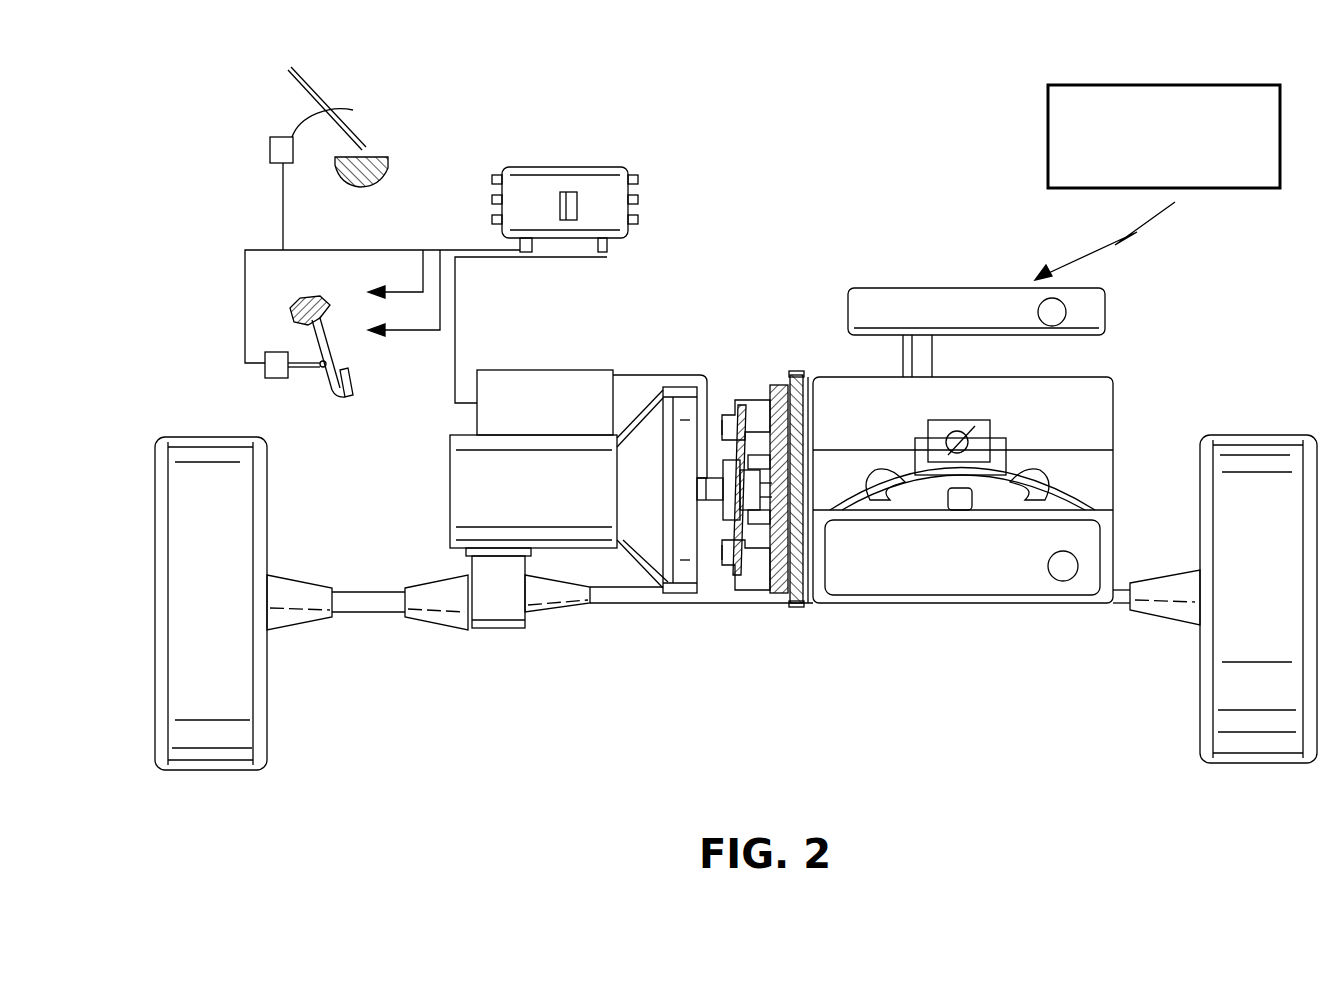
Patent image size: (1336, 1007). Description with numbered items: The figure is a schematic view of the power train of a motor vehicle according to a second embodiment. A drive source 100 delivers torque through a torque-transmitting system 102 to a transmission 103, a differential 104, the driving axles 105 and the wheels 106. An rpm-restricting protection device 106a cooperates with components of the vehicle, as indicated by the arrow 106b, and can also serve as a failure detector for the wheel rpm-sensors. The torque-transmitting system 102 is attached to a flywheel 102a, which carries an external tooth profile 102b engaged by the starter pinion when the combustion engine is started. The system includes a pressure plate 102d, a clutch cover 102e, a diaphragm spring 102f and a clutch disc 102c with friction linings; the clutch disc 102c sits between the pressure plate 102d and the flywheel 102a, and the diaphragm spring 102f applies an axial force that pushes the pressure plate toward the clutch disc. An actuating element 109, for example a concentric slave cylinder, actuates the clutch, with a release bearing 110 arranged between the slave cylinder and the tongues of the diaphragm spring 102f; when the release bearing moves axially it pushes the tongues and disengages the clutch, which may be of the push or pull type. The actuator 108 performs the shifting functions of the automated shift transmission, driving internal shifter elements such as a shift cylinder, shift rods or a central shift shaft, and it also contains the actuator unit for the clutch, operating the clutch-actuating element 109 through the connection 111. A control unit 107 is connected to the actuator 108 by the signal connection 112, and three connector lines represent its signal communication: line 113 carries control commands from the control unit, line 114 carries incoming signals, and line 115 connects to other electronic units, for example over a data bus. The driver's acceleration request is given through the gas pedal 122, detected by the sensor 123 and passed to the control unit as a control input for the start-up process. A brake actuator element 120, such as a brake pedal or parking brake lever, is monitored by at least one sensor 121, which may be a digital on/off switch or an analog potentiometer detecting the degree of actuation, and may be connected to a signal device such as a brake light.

The drive source 100 is at (1108, 397).
The torque-transmitting system 102 is at (805, 352).
The flywheel 102a is at (792, 595).
The external tooth profile 102b is at (806, 384).
The clutch disc 102c is at (775, 388).
The pressure plate 102d is at (742, 402).
The clutch cover 102e is at (745, 600).
The diaphragm spring 102f is at (735, 460).
The transmission 103 is at (645, 575).
The differential 104 is at (503, 628).
The driving axles 105 is at (350, 586).
The wheels 106 is at (270, 733).
The rpm-restricting protection device 106a is at (1250, 188).
The arrow 106b is at (1133, 233).
The control unit 107 is at (547, 166).
The actuator 108 is at (531, 370).
The actuating element 109 is at (700, 490).
The release bearing 110 is at (712, 590).
The connection 111 is at (628, 375).
The signal connection 112 is at (456, 396).
The connector line 113 is at (420, 331).
The connector line 114 is at (420, 282).
The connector line 115 is at (366, 250).
The brake actuator element 120 is at (340, 400).
The sensor 121 is at (268, 378).
The gas pedal 122 is at (312, 85).
The sensor 123 is at (268, 150).